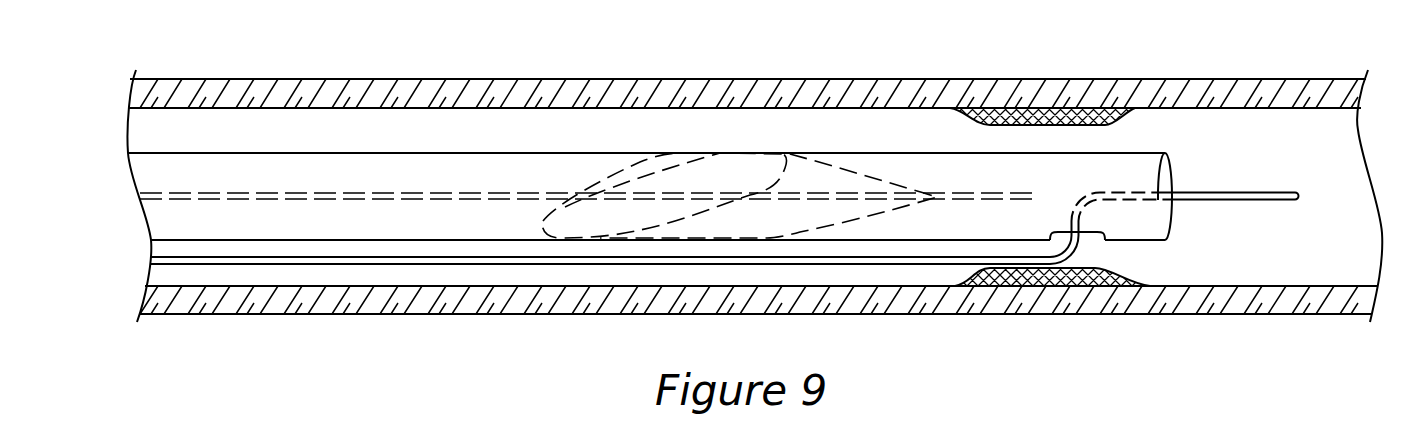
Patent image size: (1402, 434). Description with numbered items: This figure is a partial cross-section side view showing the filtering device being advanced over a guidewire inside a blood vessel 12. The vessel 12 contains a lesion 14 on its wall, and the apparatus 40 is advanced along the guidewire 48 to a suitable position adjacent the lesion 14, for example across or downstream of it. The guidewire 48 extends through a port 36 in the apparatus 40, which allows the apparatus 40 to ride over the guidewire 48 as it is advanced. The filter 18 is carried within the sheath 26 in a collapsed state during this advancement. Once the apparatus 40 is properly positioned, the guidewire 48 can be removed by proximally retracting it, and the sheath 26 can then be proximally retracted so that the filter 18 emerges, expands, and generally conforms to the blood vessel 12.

The vessel 12 is at (794, 86).
The lesion 14 is at (1008, 110).
The filter 18 is at (662, 148).
The sheath 26 is at (383, 152).
The port 36 is at (1090, 235).
The apparatus 40 is at (912, 147).
The guidewire 48 is at (1198, 202).